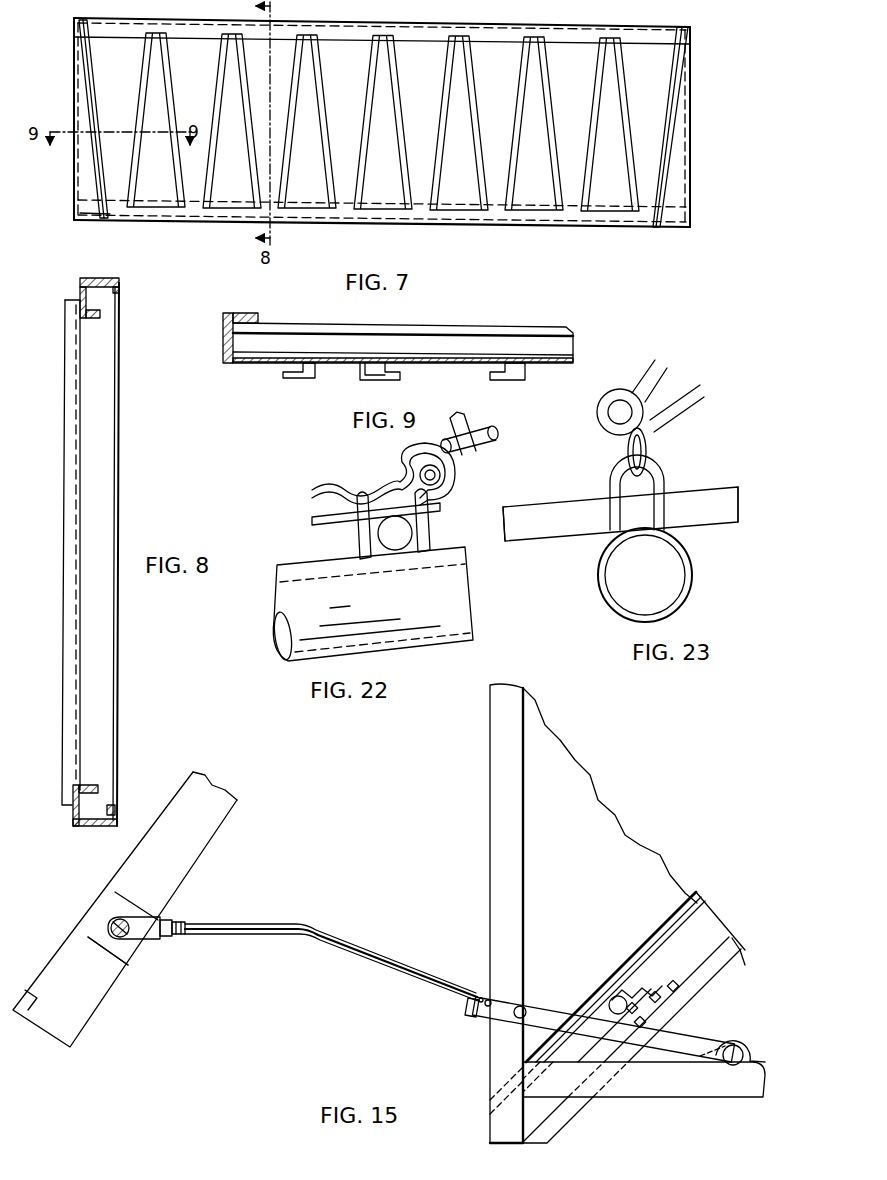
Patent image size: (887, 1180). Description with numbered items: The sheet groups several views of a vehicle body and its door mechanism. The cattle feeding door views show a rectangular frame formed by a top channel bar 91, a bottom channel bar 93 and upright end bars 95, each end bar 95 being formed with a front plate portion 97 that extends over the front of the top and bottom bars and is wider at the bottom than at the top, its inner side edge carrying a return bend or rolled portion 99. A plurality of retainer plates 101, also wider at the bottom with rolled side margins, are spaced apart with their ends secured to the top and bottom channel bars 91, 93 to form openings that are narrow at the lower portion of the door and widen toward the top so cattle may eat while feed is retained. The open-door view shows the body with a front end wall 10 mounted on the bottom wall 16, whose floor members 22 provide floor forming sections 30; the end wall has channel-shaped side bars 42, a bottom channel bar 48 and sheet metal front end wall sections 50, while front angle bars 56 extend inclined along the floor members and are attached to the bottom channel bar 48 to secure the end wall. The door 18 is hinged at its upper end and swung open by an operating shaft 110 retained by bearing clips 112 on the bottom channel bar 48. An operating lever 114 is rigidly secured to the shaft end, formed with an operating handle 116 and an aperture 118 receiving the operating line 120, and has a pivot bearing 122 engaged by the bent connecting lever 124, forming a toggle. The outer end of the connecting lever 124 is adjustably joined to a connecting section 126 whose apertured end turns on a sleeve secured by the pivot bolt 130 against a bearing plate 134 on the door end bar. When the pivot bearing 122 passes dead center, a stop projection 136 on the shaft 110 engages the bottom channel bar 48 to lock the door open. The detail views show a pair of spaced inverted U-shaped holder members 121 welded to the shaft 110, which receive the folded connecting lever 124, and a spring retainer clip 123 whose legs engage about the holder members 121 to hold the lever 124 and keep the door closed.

In FIG. 15, the front end wall 10 is at (488, 1068).
In FIG. 15, the bottom wall 16 is at (672, 926).
In FIG. 15, the door 18 is at (208, 847).
In FIG. 15, the floor member 22 is at (618, 1005).
In FIG. 15, the floor forming section 30 is at (680, 908).
In FIG. 15, the side bar 42 is at (497, 736).
In FIG. 15, the bottom channel bar 48 is at (625, 1090).
In FIG. 15, the front end wall section 50 is at (612, 805).
In FIG. 15, the front angle bar 56 is at (567, 1122).
In FIG. 7, the top channel bar 91 is at (428, 31).
In FIG. 8, the top channel bar 91 is at (102, 278).
In FIG. 7, the bottom channel bar 93 is at (562, 222).
In FIG. 8, the bottom channel bar 93 is at (88, 785).
In FIG. 9, the bottom channel bar 93 is at (550, 328).
In FIG. 7, the upright end bar 95 is at (87, 163).
In FIG. 8, the upright end bar 95 is at (108, 470).
In FIG. 9, the upright end bar 95 is at (223, 333).
In FIG. 7, the front plate portion 97 is at (97, 182).
In FIG. 9, the front plate portion 97 is at (250, 362).
In FIG. 7, the rolled portion 99 is at (92, 92).
In FIG. 9, the rolled portion 99 is at (287, 377).
In FIG. 7, the retainer plate 101 is at (462, 88).
In FIG. 8, the retainer plate 101 is at (66, 608).
In FIG. 9, the retainer plate 101 is at (455, 362).
In FIG. 22, the operating shaft 110 is at (466, 584).
In FIG. 23, the operating shaft 110 is at (691, 570).
In FIG. 15, the operating shaft 110 is at (731, 1063).
In FIG. 15, the bearing clip 112 is at (738, 1040).
In FIG. 15, the operating lever 114 is at (690, 1040).
In FIG. 15, the operating handle 116 is at (470, 1011).
In FIG. 15, the aperture 118 is at (524, 977).
In FIG. 15, the operating line 120 is at (480, 997).
In FIG. 22, the holder member 121 is at (358, 535).
In FIG. 23, the holder member 121 is at (660, 478).
In FIG. 15, the pivot bearing 122 is at (526, 1010).
In FIG. 22, the spring retainer clip 123 is at (362, 490).
In FIG. 22, the connecting lever 124 is at (410, 536).
In FIG. 23, the connecting lever 124 is at (558, 505).
In FIG. 15, the connecting lever 124 is at (330, 932).
In FIG. 15, the connecting section 126 is at (152, 932).
In FIG. 15, the pivot bolt 130 is at (108, 925).
In FIG. 15, the bearing plate 134 is at (112, 907).
In FIG. 15, the stop projection 136 is at (700, 1080).